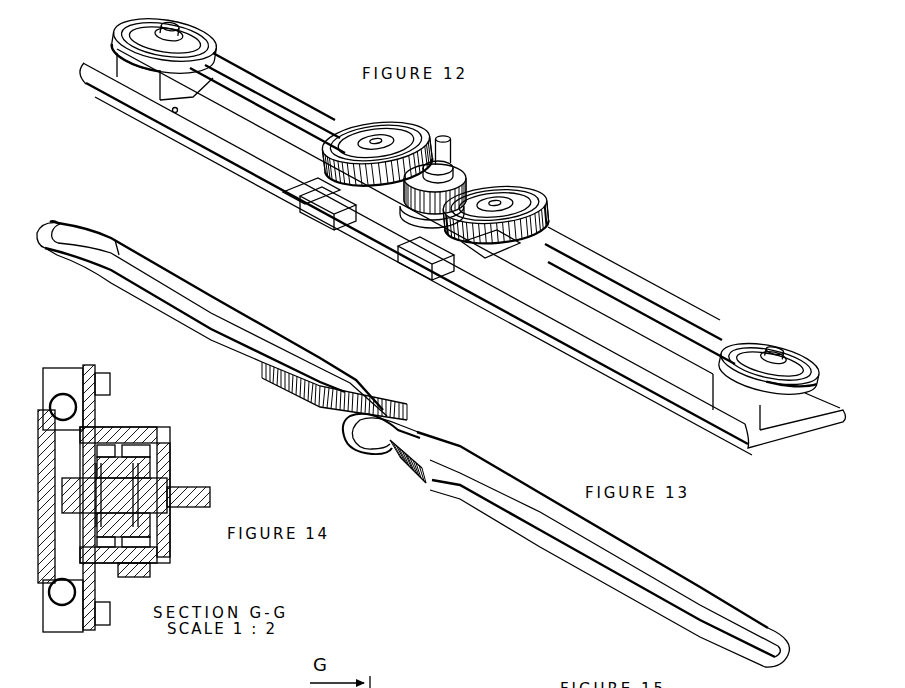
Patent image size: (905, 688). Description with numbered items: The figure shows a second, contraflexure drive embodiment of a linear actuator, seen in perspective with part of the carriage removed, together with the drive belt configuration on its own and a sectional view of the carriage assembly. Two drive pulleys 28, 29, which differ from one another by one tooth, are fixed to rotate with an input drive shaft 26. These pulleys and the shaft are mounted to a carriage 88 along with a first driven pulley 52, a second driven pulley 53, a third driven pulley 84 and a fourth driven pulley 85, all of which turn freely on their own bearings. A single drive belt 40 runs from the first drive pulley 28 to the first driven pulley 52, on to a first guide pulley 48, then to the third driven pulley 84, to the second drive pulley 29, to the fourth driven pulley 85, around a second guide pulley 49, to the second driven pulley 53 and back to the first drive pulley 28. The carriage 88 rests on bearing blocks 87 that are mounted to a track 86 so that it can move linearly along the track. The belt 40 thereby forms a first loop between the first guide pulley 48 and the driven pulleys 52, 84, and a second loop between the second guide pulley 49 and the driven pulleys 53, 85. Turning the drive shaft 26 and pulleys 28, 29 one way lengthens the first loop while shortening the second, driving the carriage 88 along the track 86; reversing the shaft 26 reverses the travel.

In FIG. 12, the input drive shaft 26 is at (452, 131).
In FIG. 14, the input drive shaft 26 is at (214, 497).
In FIG. 12, the first drive pulley 28 is at (470, 170).
In FIG. 14, the first drive pulley 28 is at (160, 472).
In FIG. 12, the second drive pulley 29 is at (402, 224).
In FIG. 14, the second drive pulley 29 is at (146, 536).
In FIG. 12, the drive belt 40 is at (674, 289).
In FIG. 13, the drive belt 40 is at (510, 474).
In FIG. 12, the first guide pulley 48 is at (222, 44).
In FIG. 12, the second guide pulley 49 is at (734, 346).
In FIG. 12, the first driven pulley 52 is at (344, 126).
In FIG. 12, the second driven pulley 53 is at (548, 197).
In FIG. 12, the third driven pulley 84 is at (313, 180).
In FIG. 12, the fourth driven pulley 85 is at (488, 263).
In FIG. 12, the track 86 is at (75, 81).
In FIG. 14, the track 86 is at (77, 402).
In FIG. 12, the bearing blocks 87 is at (312, 229).
In FIG. 14, the bearing blocks 87 is at (62, 366).
In FIG. 14, the carriage 88 is at (174, 441).